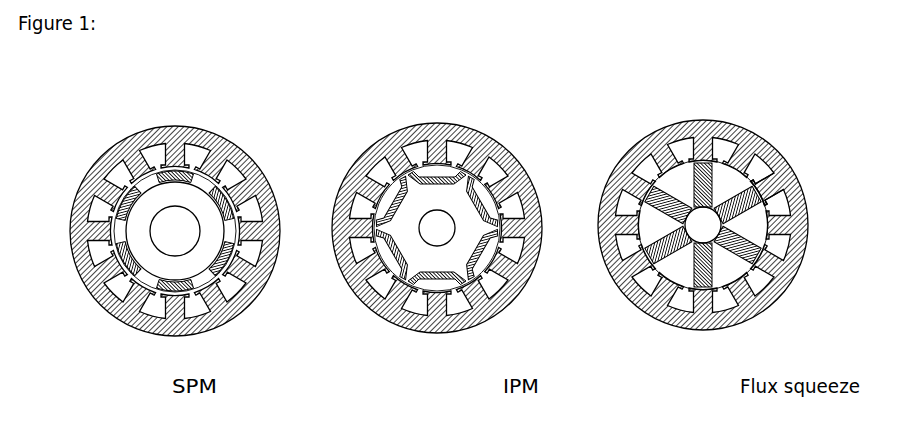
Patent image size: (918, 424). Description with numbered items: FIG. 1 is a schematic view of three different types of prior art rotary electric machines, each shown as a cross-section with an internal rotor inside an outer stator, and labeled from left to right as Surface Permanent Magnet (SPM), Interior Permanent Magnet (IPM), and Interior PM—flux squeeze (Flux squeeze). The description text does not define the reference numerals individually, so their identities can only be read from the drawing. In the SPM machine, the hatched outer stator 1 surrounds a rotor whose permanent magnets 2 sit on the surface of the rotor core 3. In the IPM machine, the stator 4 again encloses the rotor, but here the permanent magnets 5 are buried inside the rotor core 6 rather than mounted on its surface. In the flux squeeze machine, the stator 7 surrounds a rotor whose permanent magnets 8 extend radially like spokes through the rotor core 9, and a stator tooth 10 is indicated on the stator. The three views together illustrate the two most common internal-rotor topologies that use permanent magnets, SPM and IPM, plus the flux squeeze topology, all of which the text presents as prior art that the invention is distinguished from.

The stator (SPM) 1 is at (178, 135).
The surface permanent magnet 2 is at (188, 175).
The rotor core (SPM) 3 is at (222, 205).
The stator (IPM) 4 is at (435, 133).
The interior permanent magnet 5 is at (455, 175).
The rotor core (IPM) 6 is at (467, 213).
The stator (flux squeeze) 7 is at (700, 130).
The spoke permanent magnet 8 is at (727, 182).
The rotor core (flux squeeze) 9 is at (743, 200).
The stator tooth 10 is at (770, 188).